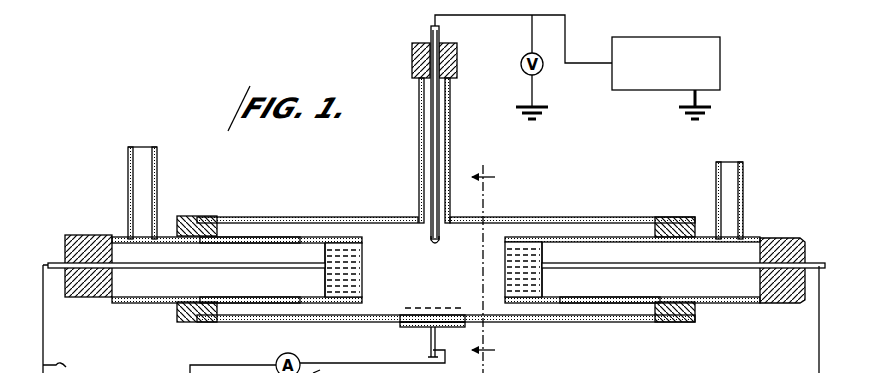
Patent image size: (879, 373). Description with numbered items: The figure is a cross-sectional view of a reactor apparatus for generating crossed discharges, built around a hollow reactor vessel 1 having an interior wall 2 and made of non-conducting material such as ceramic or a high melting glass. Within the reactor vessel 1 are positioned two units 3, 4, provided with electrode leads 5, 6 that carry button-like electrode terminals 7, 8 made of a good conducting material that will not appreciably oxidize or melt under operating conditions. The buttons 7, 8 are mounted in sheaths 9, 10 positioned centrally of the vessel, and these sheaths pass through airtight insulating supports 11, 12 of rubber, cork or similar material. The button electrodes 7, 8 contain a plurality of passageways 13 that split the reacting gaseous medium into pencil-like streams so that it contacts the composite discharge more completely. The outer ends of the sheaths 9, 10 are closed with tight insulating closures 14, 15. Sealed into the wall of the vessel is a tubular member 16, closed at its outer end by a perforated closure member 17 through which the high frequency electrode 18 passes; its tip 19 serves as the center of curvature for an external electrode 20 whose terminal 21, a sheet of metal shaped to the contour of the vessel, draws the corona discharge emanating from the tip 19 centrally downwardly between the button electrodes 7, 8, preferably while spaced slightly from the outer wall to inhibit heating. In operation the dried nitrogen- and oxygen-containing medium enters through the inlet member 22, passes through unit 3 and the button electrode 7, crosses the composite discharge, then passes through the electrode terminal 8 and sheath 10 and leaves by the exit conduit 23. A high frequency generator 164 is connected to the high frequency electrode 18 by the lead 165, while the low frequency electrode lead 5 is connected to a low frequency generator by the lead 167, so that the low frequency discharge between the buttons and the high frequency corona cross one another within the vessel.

The reactor vessel 1 is at (286, 218).
The interior wall 2 is at (378, 222).
The unit 3 is at (262, 303).
The unit 4 is at (588, 237).
The electrode lead 5 is at (165, 270).
The electrode lead 6 is at (730, 272).
The button electrode terminal 7 is at (364, 268).
The button electrode terminal 8 is at (545, 250).
The sheath 9 is at (240, 238).
The sheath 10 is at (618, 303).
The insulating support 11 is at (180, 324).
The insulating support 12 is at (688, 324).
The passageways 13 is at (376, 284).
The insulating closure 14 is at (70, 299).
The insulating closure 15 is at (799, 238).
The tubular member 16 is at (451, 112).
The closure member 17 is at (458, 58).
The high frequency electrode 18 is at (434, 124).
The tip 19 is at (441, 242).
The external electrode 20 is at (430, 351).
The terminal 21 is at (403, 325).
The inlet member 22 is at (128, 186).
The exit conduit 23 is at (745, 171).
The high frequency generator 164 is at (690, 37).
The lead 165 is at (552, 15).
The lead 167 is at (73, 319).